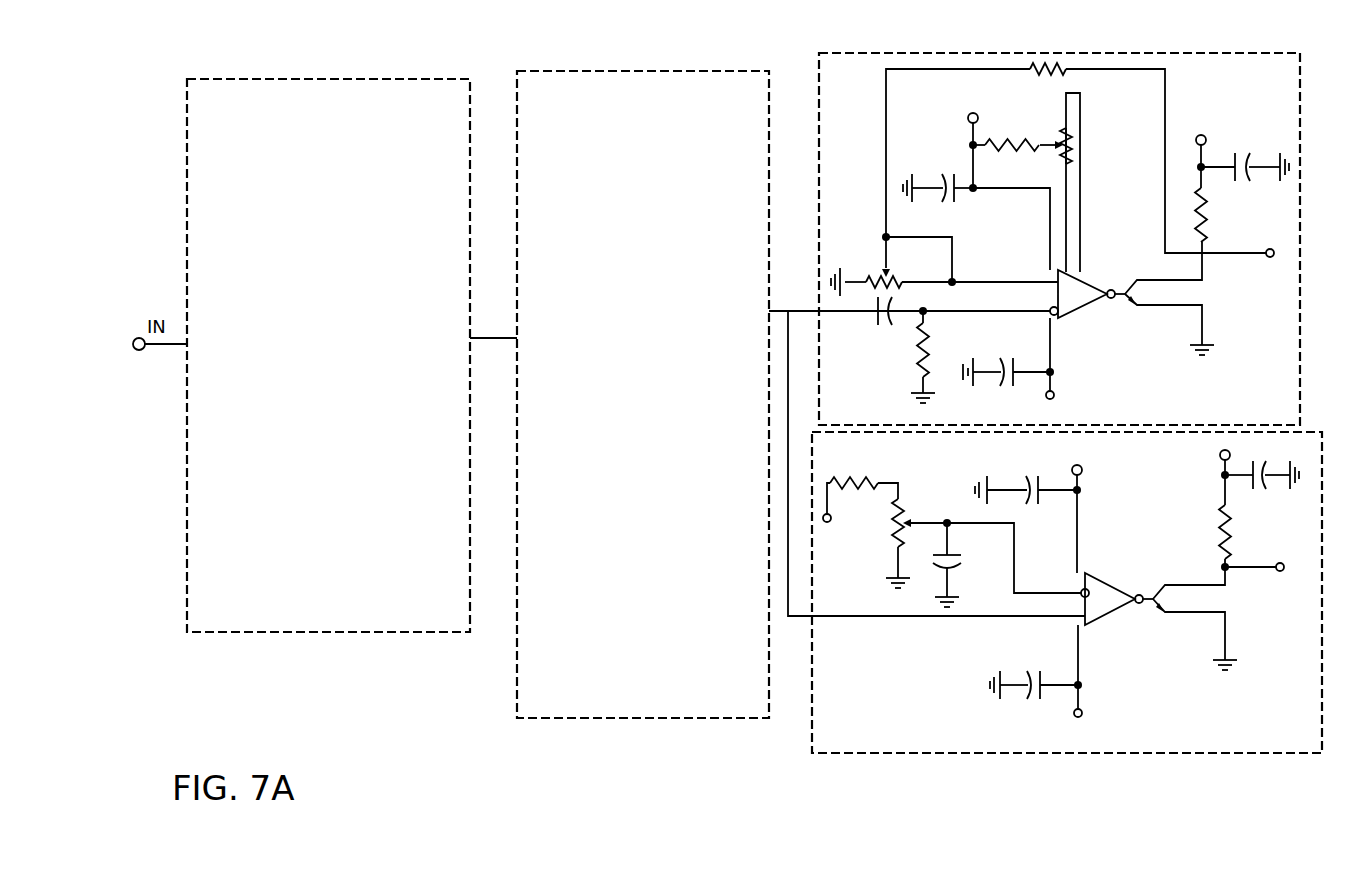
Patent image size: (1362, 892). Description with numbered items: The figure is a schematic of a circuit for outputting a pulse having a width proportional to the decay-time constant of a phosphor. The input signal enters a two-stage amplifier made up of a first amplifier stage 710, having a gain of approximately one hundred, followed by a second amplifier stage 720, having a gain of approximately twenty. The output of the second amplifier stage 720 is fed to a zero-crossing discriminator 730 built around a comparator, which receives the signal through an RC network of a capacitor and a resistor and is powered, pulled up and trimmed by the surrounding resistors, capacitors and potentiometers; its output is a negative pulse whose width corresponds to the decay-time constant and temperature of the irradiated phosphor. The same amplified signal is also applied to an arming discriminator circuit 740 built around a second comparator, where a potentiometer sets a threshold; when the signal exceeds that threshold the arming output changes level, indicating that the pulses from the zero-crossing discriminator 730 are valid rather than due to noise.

The first amplifier stage 710 is at (333, 79).
The second amplifier stage 720 is at (632, 71).
The zero-crossing discriminator 730 is at (1000, 51).
The arming discriminator circuit 740 is at (843, 753).